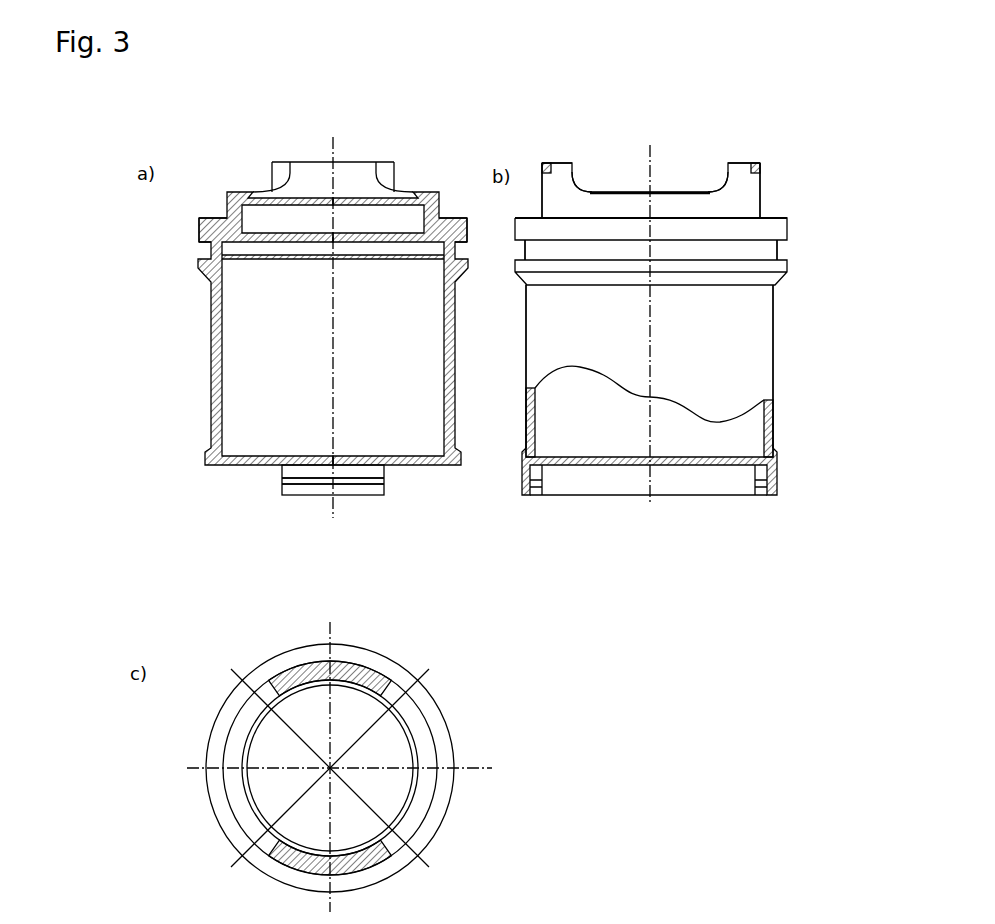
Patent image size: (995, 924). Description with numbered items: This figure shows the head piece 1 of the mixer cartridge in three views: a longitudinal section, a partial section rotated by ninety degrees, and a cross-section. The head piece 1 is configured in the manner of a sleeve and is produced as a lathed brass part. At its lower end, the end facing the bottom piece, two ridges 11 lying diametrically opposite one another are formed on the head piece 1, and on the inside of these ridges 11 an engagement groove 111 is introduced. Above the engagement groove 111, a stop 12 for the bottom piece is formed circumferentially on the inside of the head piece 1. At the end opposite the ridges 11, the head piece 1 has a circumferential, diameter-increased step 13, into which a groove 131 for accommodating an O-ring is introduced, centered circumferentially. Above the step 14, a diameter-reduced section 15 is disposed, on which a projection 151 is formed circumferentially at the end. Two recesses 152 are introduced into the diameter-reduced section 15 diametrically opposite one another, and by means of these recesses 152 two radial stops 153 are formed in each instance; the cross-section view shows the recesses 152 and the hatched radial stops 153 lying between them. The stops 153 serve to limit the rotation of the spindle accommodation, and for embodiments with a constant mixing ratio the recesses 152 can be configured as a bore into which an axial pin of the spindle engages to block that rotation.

The head piece 1 is at (428, 130).
The ridges 11 is at (293, 495).
The engagement groove 111 is at (383, 487).
The stop 12 is at (777, 467).
The diameter-increased step 13 is at (778, 275).
The groove 131 is at (777, 252).
The step 14 is at (210, 250).
The diameter-reduced section 15 is at (760, 197).
The projection 151 is at (760, 165).
The recesses 152 is at (675, 178).
The radial stops 153 is at (575, 182).